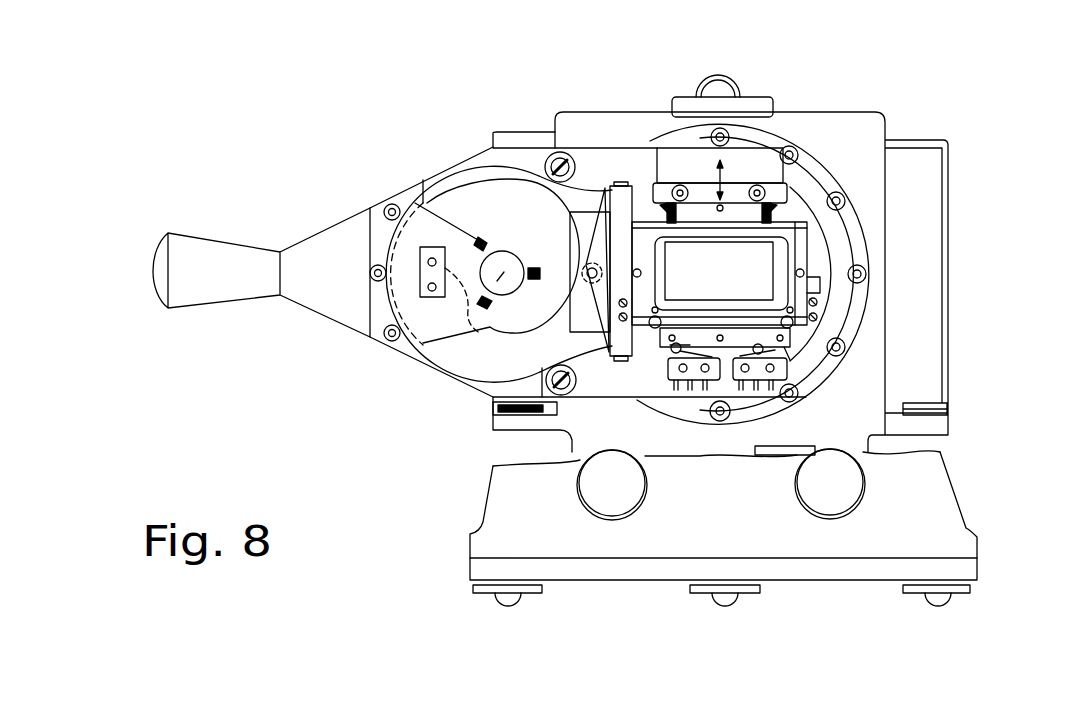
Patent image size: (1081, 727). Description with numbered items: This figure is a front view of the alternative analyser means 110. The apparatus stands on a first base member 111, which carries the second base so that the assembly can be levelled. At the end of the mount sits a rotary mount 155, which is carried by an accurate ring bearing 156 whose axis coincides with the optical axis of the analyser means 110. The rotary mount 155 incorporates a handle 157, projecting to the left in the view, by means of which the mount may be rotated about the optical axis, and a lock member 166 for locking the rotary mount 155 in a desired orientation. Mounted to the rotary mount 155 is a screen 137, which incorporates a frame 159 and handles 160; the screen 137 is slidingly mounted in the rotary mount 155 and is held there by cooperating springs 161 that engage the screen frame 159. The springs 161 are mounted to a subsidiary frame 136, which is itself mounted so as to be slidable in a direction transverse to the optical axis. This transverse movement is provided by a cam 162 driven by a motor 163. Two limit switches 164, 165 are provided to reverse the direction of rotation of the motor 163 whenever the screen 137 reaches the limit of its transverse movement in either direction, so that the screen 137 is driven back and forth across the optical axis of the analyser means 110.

The analyser means 110 is at (857, 101).
The first base member 111 is at (842, 577).
The subsidiary frame 136 is at (607, 355).
The screen 137 is at (767, 267).
The rotary mount 155 is at (590, 178).
The ring bearing 156 is at (813, 217).
The handle 157 is at (220, 296).
The frame 159 is at (807, 222).
The handles 160 is at (680, 206).
The springs 161 is at (636, 284).
The cam 162 is at (507, 327).
The motor 163 is at (490, 278).
The limit switch 164 is at (672, 383).
The limit switch 165 is at (755, 383).
The lock member 166 is at (740, 93).